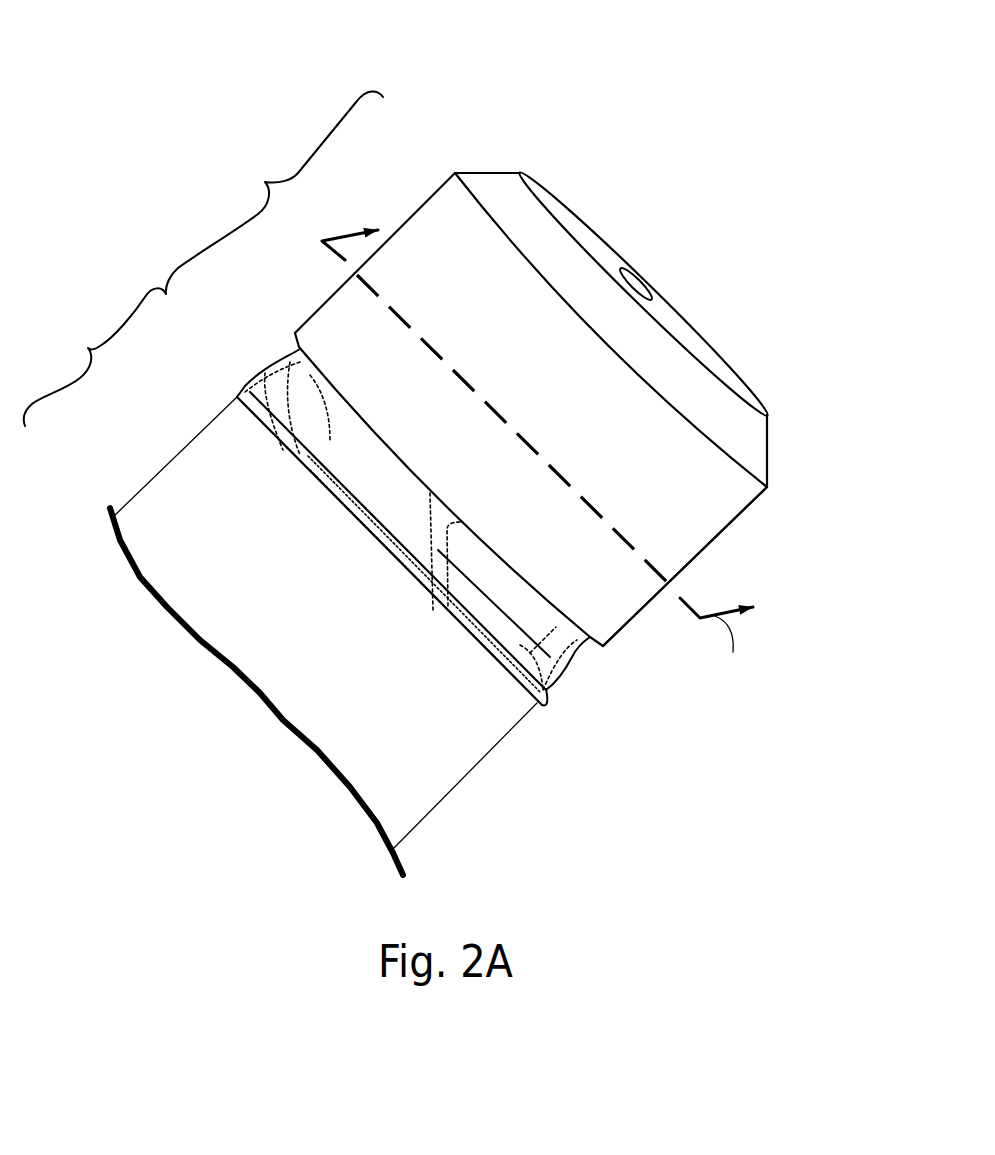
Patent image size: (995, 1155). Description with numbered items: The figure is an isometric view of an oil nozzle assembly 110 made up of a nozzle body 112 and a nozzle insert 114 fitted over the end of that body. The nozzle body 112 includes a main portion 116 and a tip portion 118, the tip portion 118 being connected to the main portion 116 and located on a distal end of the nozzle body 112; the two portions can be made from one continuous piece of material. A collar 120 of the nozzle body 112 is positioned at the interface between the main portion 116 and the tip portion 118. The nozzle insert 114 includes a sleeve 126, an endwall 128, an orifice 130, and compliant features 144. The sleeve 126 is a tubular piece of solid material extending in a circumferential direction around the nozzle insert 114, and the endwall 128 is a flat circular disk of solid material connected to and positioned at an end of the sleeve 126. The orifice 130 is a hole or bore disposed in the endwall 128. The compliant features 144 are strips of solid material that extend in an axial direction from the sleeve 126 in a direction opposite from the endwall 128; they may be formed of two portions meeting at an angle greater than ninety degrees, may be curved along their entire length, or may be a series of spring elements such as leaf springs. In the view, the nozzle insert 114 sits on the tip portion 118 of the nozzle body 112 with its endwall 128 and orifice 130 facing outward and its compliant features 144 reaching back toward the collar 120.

The oil nozzle assembly 110 is at (278, 98).
The nozzle body 112 is at (268, 580).
The nozzle insert 114 is at (585, 405).
The main portion 116 is at (95, 357).
The tip portion 118 is at (274, 192).
The collar 120 is at (420, 603).
The sleeve 126 is at (720, 535).
The endwall 128 is at (583, 233).
The orifice 130 is at (645, 276).
The compliant features 144 is at (305, 407).